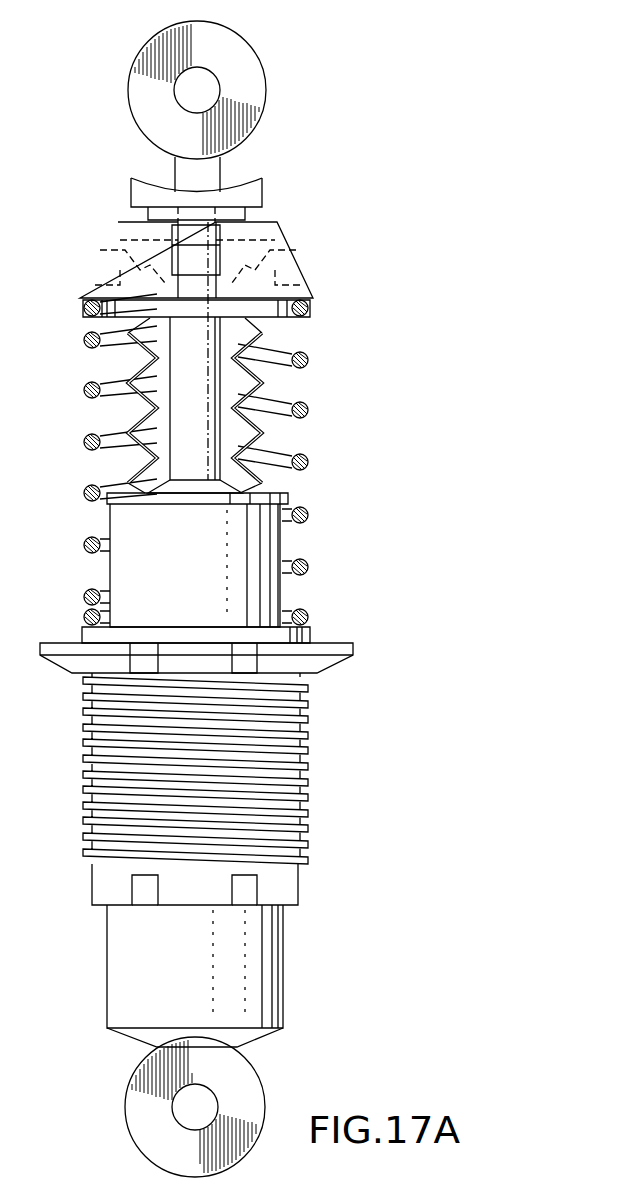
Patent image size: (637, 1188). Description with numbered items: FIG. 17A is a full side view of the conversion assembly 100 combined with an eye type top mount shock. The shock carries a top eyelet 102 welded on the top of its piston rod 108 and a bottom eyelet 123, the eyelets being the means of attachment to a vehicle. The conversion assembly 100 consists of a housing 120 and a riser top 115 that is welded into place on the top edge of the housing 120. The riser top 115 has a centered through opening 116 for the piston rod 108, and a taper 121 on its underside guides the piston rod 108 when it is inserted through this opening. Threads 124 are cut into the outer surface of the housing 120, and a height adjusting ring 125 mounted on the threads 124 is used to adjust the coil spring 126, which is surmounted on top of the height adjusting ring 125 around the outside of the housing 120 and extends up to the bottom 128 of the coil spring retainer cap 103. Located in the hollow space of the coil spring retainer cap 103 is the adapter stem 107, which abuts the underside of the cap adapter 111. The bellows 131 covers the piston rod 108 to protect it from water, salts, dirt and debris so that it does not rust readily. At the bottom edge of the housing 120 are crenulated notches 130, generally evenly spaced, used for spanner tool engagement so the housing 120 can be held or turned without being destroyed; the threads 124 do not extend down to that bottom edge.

The conversion assembly 100 is at (428, 140).
The top eyelet 102 is at (253, 83).
The coil spring retainer cap 103 is at (290, 240).
The adapter stem 107 is at (188, 262).
The piston rod 108 is at (215, 180).
The cap adapter 111 is at (263, 193).
The riser top 115 is at (287, 494).
The through opening 116 is at (193, 470).
The housing 120 is at (300, 815).
The taper 121 is at (115, 512).
The bottom eyelet 123 is at (197, 1107).
The threads 124 is at (300, 748).
The height adjusting ring 125 is at (337, 647).
The coil spring 126 is at (312, 357).
The bottom of the coil spring retainer cap 128 is at (84, 306).
The crenulated notches 130 is at (145, 903).
The bellows 131 is at (260, 283).